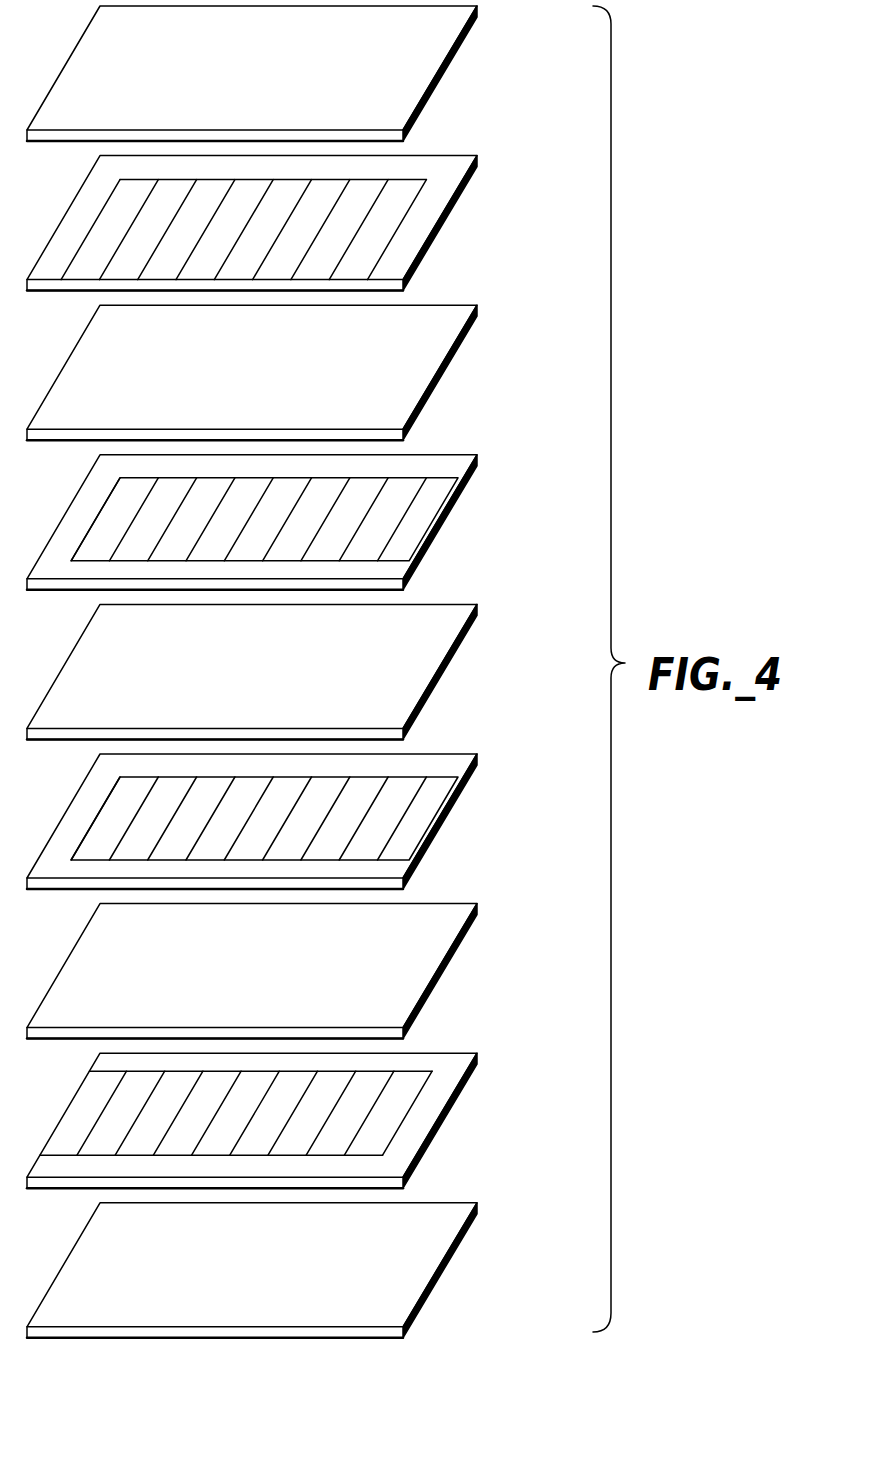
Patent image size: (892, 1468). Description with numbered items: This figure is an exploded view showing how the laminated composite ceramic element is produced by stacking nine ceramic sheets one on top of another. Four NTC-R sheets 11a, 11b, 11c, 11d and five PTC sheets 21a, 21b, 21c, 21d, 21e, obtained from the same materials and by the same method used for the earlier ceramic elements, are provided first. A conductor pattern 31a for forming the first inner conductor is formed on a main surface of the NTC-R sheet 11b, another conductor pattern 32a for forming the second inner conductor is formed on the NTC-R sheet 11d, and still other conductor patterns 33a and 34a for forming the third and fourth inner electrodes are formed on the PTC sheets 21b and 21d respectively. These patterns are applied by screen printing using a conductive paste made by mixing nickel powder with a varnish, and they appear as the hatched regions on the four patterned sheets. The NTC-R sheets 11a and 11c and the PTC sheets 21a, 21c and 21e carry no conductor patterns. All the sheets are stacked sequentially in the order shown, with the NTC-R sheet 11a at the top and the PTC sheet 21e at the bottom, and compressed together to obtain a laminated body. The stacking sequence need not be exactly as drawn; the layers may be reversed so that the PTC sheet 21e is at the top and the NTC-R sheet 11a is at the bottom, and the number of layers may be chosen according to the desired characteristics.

The NTC-R sheet 11a is at (417, 72).
The NTC-R sheet 11b is at (451, 160).
The NTC-R sheet 11c is at (417, 371).
The NTC-R sheet 11d is at (451, 459).
The PTC sheet 21a is at (417, 670).
The PTC sheet 21b is at (451, 758).
The PTC sheet 21c is at (417, 970).
The PTC sheet 21d is at (451, 1057).
The PTC sheet 21e is at (417, 1269).
The conductor pattern 31a is at (372, 238).
The conductor pattern 32a is at (372, 537).
The conductor pattern 33a is at (372, 836).
The conductor pattern 34a is at (372, 1135).